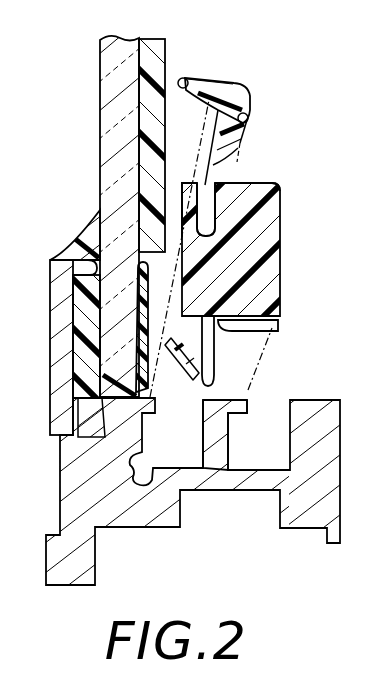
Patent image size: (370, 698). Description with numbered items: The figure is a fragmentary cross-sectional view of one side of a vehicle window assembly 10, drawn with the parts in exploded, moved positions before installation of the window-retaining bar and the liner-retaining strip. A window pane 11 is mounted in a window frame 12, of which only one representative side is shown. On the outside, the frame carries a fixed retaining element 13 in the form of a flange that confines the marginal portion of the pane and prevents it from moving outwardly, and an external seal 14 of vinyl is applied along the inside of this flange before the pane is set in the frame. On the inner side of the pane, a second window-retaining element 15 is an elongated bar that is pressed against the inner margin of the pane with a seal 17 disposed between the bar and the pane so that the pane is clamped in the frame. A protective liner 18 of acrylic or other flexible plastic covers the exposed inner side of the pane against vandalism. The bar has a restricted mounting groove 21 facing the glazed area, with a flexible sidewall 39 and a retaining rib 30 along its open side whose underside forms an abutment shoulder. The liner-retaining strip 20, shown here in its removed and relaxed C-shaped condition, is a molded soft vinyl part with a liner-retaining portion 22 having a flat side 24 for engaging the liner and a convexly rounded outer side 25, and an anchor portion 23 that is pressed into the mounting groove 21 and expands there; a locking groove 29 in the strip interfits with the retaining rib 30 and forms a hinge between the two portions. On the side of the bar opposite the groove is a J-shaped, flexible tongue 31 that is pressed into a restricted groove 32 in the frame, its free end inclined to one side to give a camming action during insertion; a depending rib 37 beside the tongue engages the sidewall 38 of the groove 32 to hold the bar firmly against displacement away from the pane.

The window assembly 10 is at (74, 186).
The window pane 11 is at (110, 70).
The window frame 12 is at (56, 470).
The retaining element 13 is at (57, 342).
The external seal 14 is at (78, 305).
The second window-retaining element 15 is at (256, 248).
The seal 17 is at (150, 292).
The protective liner 18 is at (148, 118).
The liner-retaining strip 20 is at (209, 112).
The mounting groove 21 is at (278, 193).
The liner-retaining portion 22 is at (236, 112).
The anchor portion 23 is at (241, 147).
The flat side 24 is at (181, 78).
The convexly rounded outer side 25 is at (206, 77).
The locking groove 29 is at (250, 117).
The retaining rib 30 is at (237, 180).
The tongue 31 is at (220, 363).
The groove 32 is at (178, 452).
The depending rib 37 is at (237, 333).
The sidewall 38 is at (198, 443).
The sidewall 39 is at (182, 195).